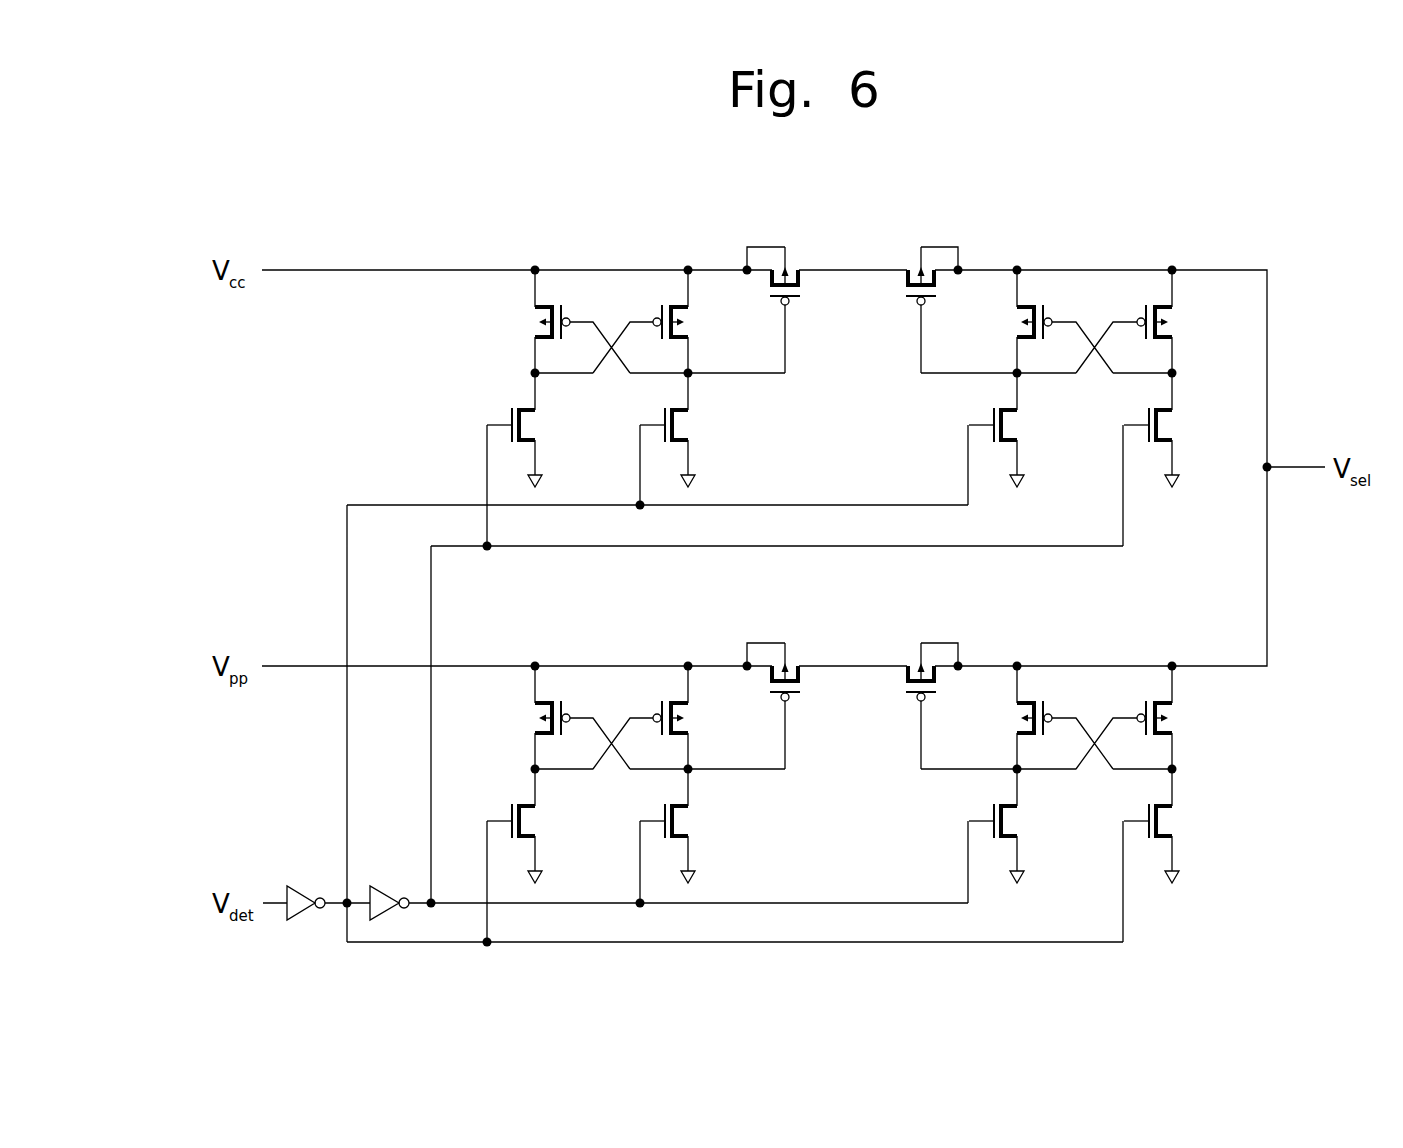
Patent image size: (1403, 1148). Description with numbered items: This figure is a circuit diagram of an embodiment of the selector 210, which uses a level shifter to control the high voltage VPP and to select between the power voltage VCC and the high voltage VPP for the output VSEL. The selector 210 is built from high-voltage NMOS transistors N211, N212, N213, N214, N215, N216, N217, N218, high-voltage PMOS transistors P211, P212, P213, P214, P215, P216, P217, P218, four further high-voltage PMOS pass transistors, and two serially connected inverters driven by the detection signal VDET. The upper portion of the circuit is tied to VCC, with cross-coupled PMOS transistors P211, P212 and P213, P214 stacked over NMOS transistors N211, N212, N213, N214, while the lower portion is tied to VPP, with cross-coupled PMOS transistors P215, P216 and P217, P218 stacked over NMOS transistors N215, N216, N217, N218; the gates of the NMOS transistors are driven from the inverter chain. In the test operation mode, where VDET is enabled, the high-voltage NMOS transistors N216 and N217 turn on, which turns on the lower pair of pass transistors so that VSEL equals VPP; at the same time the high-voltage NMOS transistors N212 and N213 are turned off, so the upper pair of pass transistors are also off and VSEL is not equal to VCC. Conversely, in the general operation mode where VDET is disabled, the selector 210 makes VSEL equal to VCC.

The selector 210 is at (1359, 206).
The high-voltage PMOS transistor P211 is at (525, 321).
The high-voltage PMOS transistor P212 is at (703, 321).
The high-voltage PMOS transistor P213 is at (1001, 321).
The high-voltage PMOS transistor P214 is at (1187, 321).
The high-voltage PMOS transistor P215 is at (525, 717).
The high-voltage PMOS transistor P216 is at (703, 717).
The high-voltage PMOS transistor P217 is at (1001, 717).
The high-voltage PMOS transistor P218 is at (1187, 717).
The high-voltage NMOS transistor N211 is at (545, 459).
The high-voltage NMOS transistor N212 is at (698, 439).
The high-voltage NMOS transistor N213 is at (1027, 439).
The high-voltage NMOS transistor N214 is at (1182, 459).
The high-voltage NMOS transistor N215 is at (545, 855).
The high-voltage NMOS transistor N216 is at (698, 836).
The high-voltage NMOS transistor N217 is at (1027, 836).
The high-voltage NMOS transistor N218 is at (1182, 855).